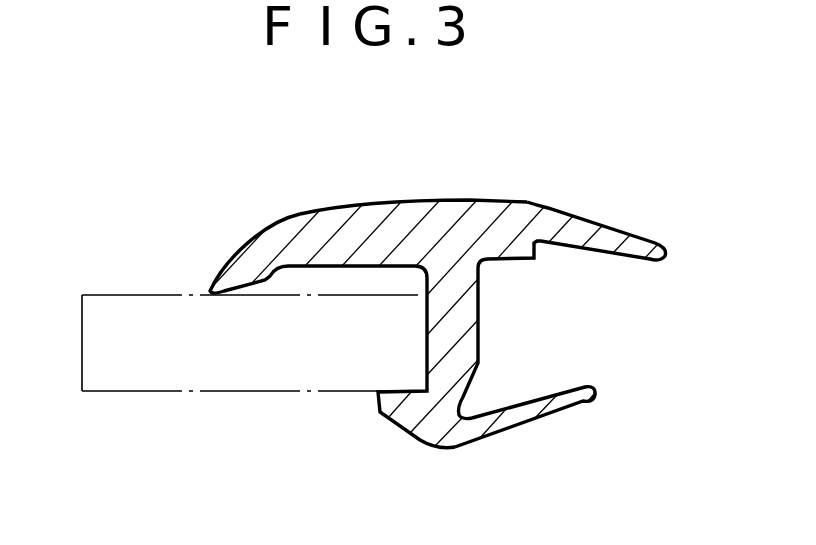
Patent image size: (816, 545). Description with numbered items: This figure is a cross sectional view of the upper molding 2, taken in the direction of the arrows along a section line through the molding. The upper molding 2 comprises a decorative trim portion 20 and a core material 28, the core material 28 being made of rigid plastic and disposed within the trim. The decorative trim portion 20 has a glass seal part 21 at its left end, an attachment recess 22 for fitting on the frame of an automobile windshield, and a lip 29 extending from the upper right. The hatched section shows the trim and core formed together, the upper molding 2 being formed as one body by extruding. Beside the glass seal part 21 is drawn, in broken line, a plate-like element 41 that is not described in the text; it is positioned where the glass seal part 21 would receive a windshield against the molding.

The molding 2 is at (424, 200).
The head portion 20 is at (512, 220).
The lip 21 is at (315, 266).
The leg portion 22 is at (535, 327).
The wall portion 28 is at (437, 346).
The flange lip 29 is at (603, 238).
The panel 41 is at (244, 378).